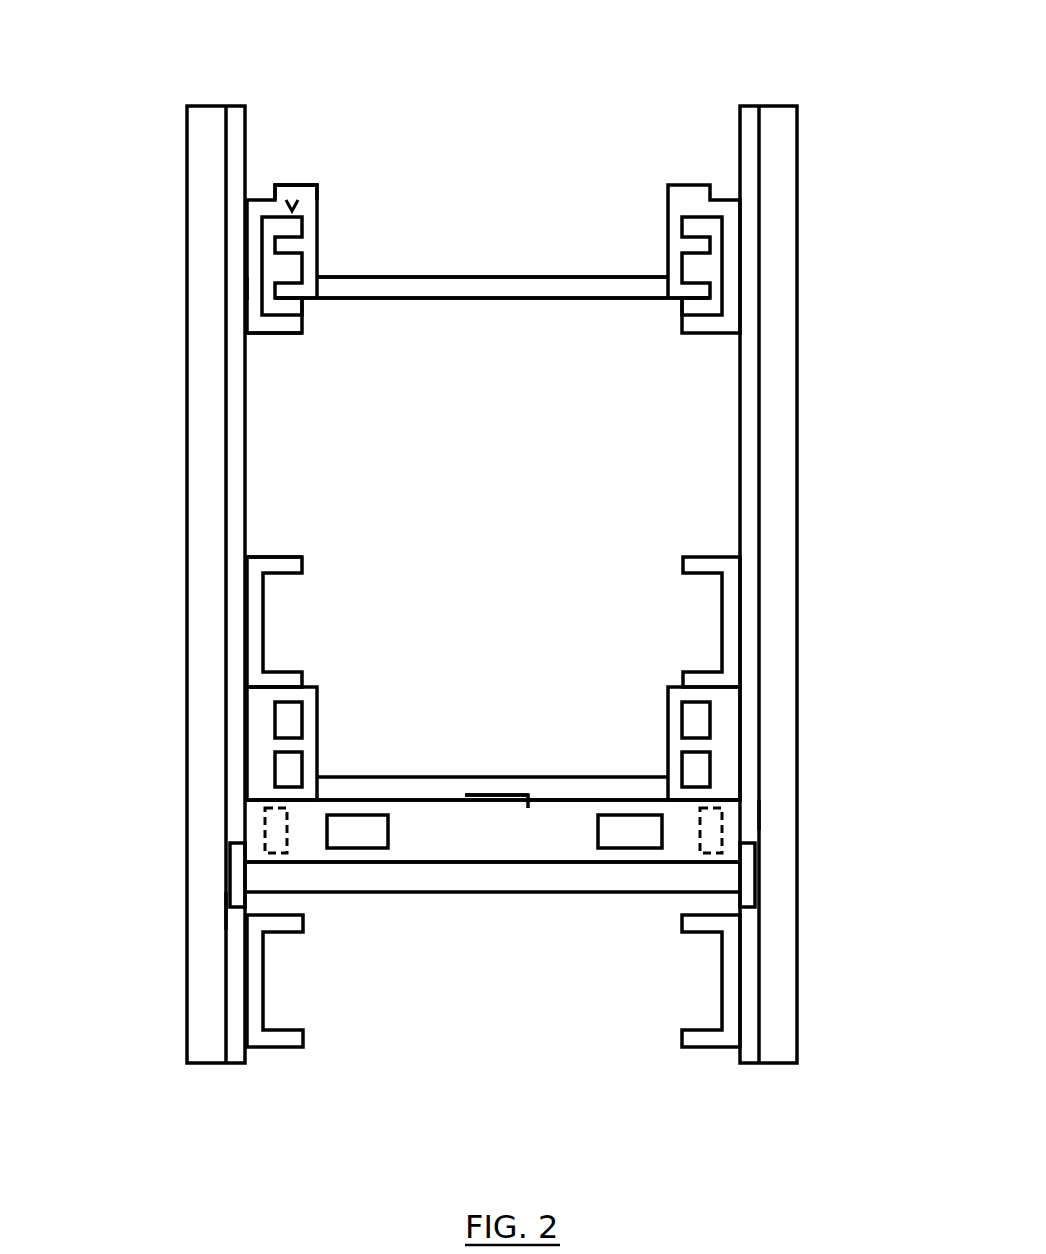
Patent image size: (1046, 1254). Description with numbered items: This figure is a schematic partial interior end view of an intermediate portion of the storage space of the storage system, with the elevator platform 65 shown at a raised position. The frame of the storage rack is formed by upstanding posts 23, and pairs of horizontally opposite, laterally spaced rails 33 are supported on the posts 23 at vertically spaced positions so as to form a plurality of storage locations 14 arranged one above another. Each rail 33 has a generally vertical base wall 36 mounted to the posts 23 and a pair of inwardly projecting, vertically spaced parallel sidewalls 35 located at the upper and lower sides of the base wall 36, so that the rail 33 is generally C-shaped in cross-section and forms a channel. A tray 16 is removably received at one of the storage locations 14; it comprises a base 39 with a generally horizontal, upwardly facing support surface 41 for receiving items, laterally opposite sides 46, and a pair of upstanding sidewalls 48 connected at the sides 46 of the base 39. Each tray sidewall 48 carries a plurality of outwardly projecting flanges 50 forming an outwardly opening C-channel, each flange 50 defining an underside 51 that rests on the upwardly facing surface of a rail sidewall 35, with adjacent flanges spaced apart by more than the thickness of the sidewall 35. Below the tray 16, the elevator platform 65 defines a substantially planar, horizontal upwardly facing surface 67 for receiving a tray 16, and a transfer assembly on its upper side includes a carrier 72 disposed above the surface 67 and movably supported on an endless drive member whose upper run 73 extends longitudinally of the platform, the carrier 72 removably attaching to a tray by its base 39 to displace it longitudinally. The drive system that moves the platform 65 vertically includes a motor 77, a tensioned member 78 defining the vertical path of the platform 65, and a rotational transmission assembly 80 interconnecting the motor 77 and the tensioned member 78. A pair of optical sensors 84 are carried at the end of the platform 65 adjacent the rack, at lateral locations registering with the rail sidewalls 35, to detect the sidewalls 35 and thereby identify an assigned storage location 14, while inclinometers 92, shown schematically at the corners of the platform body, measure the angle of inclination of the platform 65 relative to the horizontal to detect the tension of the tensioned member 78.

The storage location 14 is at (128, 262).
The tray 16 is at (497, 312).
The upstanding post 23 is at (197, 157).
The rail 33 is at (247, 247).
The rail sidewall 35 is at (262, 186).
The base wall 36 is at (233, 287).
The base 39 is at (441, 290).
The support surface 41 is at (458, 277).
The side 46 is at (330, 271).
The tray sidewall 48 is at (331, 713).
The flange 50 is at (291, 175).
The underside 51 is at (294, 204).
The platform 65 is at (250, 808).
The upwardly-facing surface 67 is at (556, 797).
The carrier 72 is at (488, 795).
The upper run 73 is at (520, 797).
The motor 77 is at (493, 876).
The tensioned member 78 is at (240, 922).
The rotational transmission assembly 80 is at (238, 873).
The optical sensor 84 is at (265, 832).
The inclinometer 92 is at (635, 848).